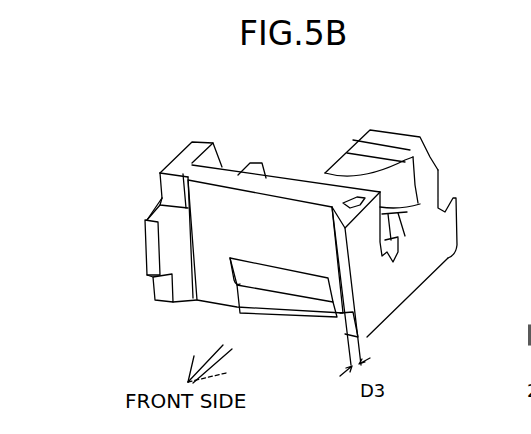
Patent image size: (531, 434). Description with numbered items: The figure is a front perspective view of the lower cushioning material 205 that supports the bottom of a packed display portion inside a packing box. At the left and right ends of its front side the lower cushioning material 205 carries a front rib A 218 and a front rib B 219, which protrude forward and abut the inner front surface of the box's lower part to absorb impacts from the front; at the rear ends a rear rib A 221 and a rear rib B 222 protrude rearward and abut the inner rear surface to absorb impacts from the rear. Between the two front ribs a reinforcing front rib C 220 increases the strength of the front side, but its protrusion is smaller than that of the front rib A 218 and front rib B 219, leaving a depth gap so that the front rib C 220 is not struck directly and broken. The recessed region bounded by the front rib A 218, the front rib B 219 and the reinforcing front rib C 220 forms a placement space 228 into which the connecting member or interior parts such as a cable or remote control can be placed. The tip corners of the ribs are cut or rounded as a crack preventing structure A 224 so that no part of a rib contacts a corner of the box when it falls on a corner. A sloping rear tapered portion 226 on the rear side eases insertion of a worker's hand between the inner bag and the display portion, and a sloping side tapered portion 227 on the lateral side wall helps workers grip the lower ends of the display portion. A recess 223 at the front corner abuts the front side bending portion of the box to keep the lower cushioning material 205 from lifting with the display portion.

The lower cushioning material 205 is at (408, 350).
The front rib A 218 is at (345, 258).
The front rib B 219 is at (150, 240).
The reinforcing front rib C 220 is at (275, 313).
The rear rib A 221 is at (461, 198).
The rear rib B 222 is at (255, 162).
The recess 223 is at (166, 203).
The crack preventing structure A 224 is at (163, 287).
The rear tapered portion 226 is at (347, 152).
The side tapered portion 227 is at (213, 143).
The placement space 228 is at (248, 238).